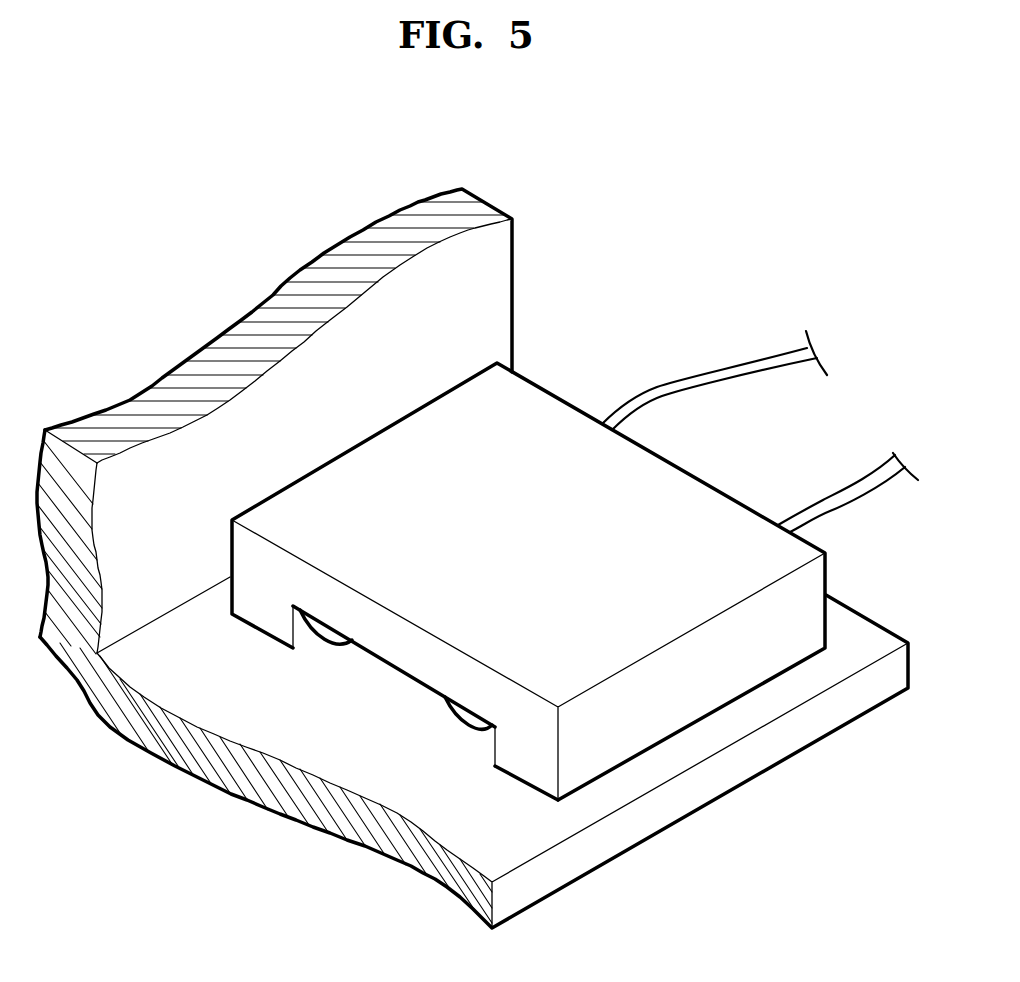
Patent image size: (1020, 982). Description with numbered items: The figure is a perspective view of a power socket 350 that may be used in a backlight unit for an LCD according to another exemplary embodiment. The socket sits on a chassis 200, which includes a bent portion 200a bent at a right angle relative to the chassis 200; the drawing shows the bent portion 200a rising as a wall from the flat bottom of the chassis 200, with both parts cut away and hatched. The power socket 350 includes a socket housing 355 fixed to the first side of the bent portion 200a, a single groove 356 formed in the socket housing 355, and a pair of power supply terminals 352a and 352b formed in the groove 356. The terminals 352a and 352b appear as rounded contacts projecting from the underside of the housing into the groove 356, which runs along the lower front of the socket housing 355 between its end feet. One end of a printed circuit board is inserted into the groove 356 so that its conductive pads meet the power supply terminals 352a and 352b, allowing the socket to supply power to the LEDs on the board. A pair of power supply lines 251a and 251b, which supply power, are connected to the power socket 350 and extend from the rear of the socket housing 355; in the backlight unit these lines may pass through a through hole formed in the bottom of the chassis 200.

The chassis 200 is at (524, 292).
The bent portion 200a is at (545, 837).
The power socket 350 is at (533, 585).
The socket housing 355 is at (560, 420).
The groove 356 is at (495, 747).
The power supply terminal 352a is at (313, 635).
The power supply terminal 352b is at (448, 715).
The power supply line 251a is at (725, 373).
The power supply line 251b is at (843, 507).